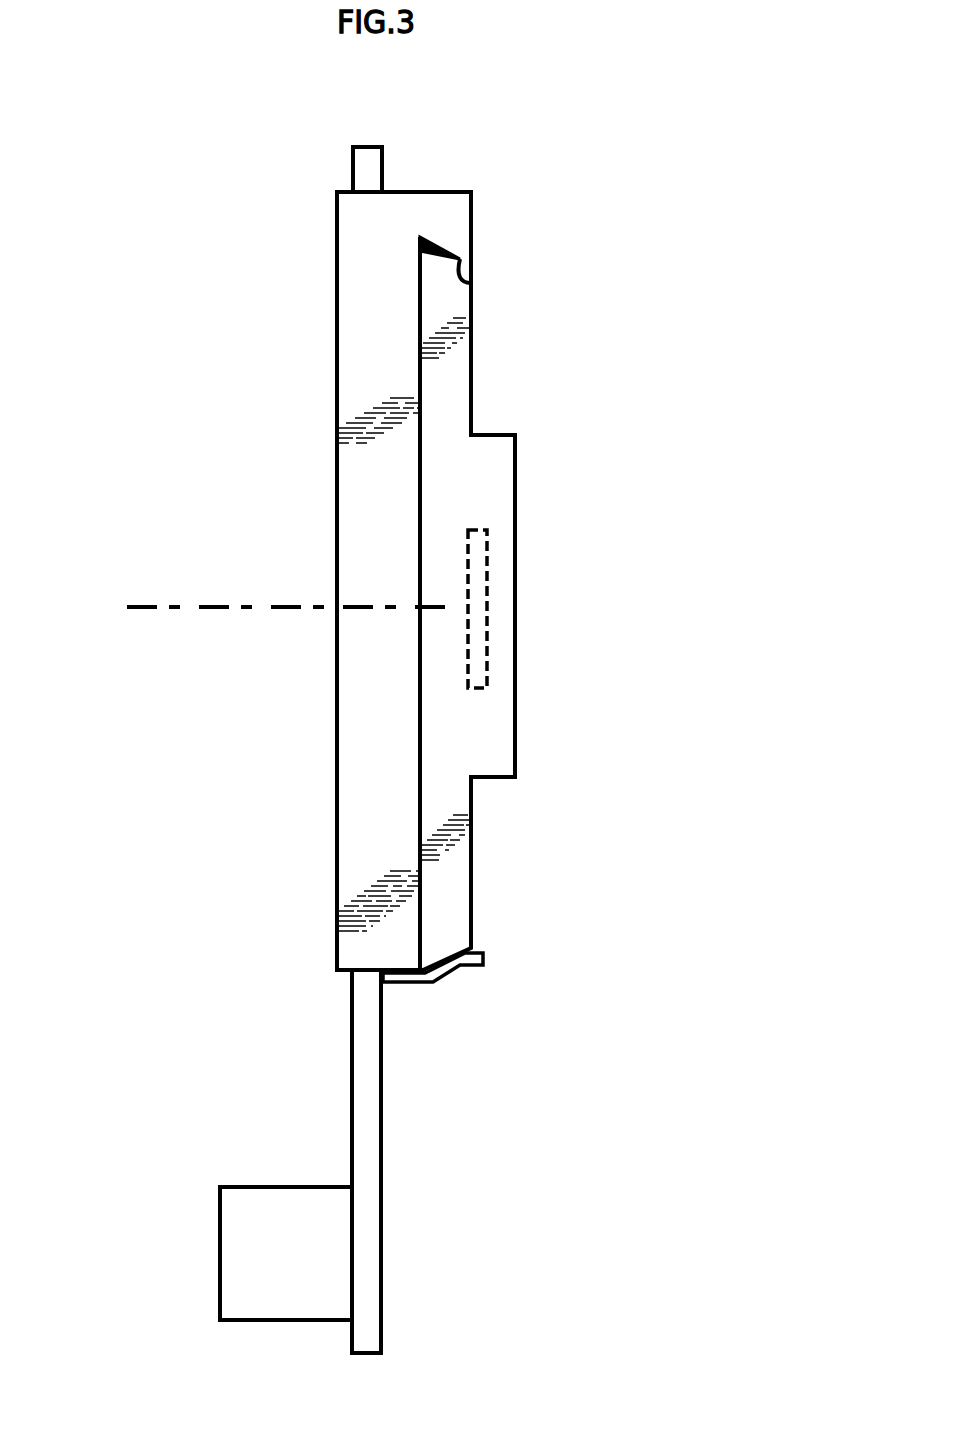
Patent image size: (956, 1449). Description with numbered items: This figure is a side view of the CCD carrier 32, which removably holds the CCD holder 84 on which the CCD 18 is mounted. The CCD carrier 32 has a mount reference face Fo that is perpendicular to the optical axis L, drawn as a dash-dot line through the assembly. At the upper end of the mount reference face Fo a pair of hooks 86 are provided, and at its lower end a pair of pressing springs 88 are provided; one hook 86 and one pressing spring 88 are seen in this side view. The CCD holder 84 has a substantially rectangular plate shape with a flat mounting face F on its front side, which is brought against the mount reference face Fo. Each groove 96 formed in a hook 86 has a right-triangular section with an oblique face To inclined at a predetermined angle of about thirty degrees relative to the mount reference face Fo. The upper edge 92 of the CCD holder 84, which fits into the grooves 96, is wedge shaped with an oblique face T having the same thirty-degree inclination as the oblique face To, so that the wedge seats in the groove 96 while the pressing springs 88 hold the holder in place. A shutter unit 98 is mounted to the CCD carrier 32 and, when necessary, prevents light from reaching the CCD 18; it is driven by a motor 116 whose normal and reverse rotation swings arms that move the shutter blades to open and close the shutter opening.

The CCD 18 is at (477, 618).
The CCD carrier 32 is at (353, 388).
The CCD holder 84 is at (478, 477).
The hooks 86 is at (452, 212).
The pressing springs 88 is at (487, 963).
The upper edge 92 is at (440, 258).
The grooves 96 is at (477, 283).
The shutter unit 98 is at (358, 1088).
The motor 116 is at (240, 1250).
The oblique face T is at (440, 256).
The oblique face To is at (440, 256).
The mounting face F is at (420, 670).
The mount reference face Fo is at (420, 700).
The optical axis L is at (142, 605).